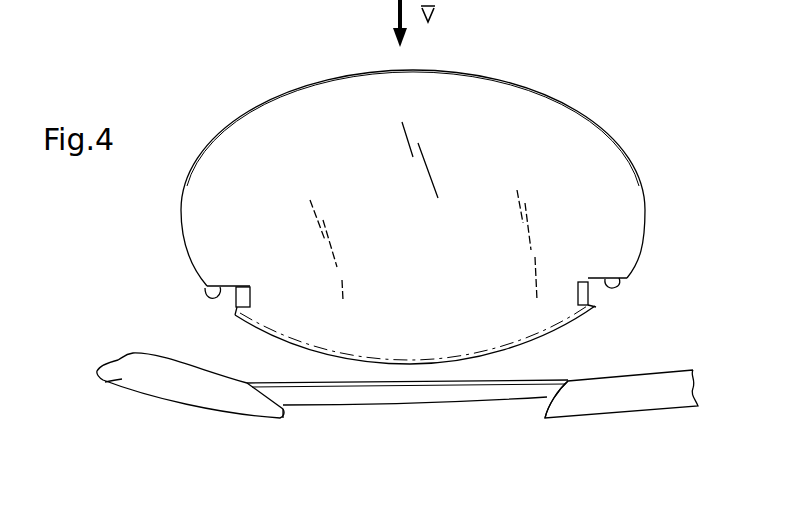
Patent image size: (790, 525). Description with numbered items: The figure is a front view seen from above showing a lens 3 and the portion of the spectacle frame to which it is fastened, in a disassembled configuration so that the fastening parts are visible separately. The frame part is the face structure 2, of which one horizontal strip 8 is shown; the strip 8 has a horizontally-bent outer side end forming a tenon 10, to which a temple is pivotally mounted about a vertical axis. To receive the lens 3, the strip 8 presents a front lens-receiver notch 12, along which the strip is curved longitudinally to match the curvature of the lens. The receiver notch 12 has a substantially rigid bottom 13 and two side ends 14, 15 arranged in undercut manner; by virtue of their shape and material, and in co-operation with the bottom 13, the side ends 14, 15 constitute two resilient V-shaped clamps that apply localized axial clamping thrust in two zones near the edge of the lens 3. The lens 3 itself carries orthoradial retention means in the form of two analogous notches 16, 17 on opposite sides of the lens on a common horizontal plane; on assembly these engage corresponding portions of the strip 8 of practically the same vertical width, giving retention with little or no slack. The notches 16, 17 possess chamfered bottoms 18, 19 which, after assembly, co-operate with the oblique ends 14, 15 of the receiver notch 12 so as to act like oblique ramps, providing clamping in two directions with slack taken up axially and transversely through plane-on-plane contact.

The face structure 2 is at (174, 416).
The lens 3 is at (270, 98).
The horizontal strip 8 is at (606, 417).
The tenon 10 is at (120, 385).
The lens-receiver notch 12 is at (407, 449).
The bottom of the receiver notch 13 is at (466, 398).
The side end of the receiver notch 14 is at (293, 413).
The side end of the receiver notch 15 is at (548, 400).
The notch 16 is at (205, 296).
The notch 17 is at (614, 285).
The chamfered bottom 18 is at (237, 296).
The chamfered bottom 19 is at (590, 295).